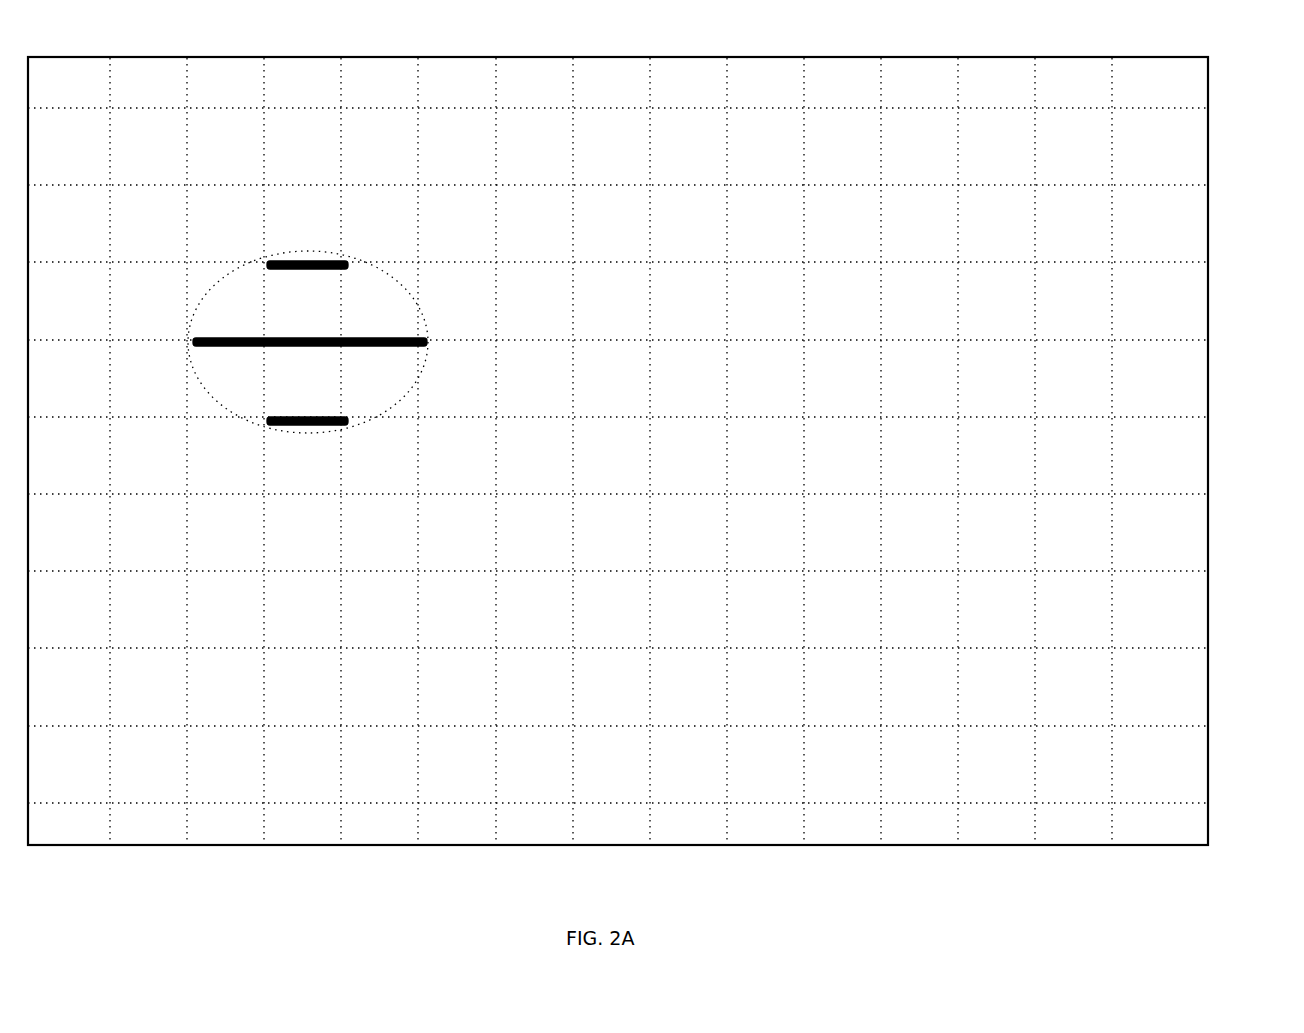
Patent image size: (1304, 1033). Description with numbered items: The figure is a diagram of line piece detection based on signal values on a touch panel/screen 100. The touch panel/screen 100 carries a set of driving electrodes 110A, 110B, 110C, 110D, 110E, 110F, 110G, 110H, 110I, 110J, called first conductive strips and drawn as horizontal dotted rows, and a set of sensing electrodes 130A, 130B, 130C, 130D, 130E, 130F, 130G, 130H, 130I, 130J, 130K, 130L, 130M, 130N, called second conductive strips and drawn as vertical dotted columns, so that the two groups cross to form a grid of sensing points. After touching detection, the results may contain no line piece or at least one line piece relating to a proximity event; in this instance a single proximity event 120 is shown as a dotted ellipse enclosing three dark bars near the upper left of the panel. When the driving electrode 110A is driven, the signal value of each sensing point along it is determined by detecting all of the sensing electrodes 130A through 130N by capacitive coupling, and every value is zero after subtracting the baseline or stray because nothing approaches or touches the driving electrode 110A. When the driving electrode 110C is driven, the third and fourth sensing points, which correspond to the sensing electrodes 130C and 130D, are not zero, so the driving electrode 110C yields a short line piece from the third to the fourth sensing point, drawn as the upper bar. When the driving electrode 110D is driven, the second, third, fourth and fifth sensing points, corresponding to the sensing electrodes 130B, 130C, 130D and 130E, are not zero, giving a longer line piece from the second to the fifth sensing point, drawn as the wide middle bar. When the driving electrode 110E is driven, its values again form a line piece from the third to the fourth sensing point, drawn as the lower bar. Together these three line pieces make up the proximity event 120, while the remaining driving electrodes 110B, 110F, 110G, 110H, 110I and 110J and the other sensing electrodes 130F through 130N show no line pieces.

The touch panel/screen 100 is at (182, 845).
The proximity event 120 is at (308, 433).
The driving electrode 110A is at (1157, 108).
The driving electrode 110B is at (1157, 185).
The driving electrode 110C is at (1157, 262).
The driving electrode 110D is at (1157, 340).
The driving electrode 110E is at (1157, 417).
The driving electrode 110F is at (1157, 494).
The driving electrode 110G is at (1157, 571).
The driving electrode 110H is at (1157, 648).
The driving electrode 110I is at (1157, 726).
The driving electrode 110J is at (1157, 803).
The sensing electrode 130A is at (110, 102).
The sensing electrode 130B is at (187, 102).
The sensing electrode 130C is at (264, 102).
The sensing electrode 130D is at (341, 102).
The sensing electrode 130E is at (418, 102).
The sensing electrode 130F is at (496, 102).
The sensing electrode 130G is at (573, 102).
The sensing electrode 130H is at (650, 102).
The sensing electrode 130I is at (727, 102).
The sensing electrode 130J is at (804, 102).
The sensing electrode 130K is at (881, 102).
The sensing electrode 130L is at (958, 102).
The sensing electrode 130M is at (1035, 102).
The sensing electrode 130N is at (1112, 102).